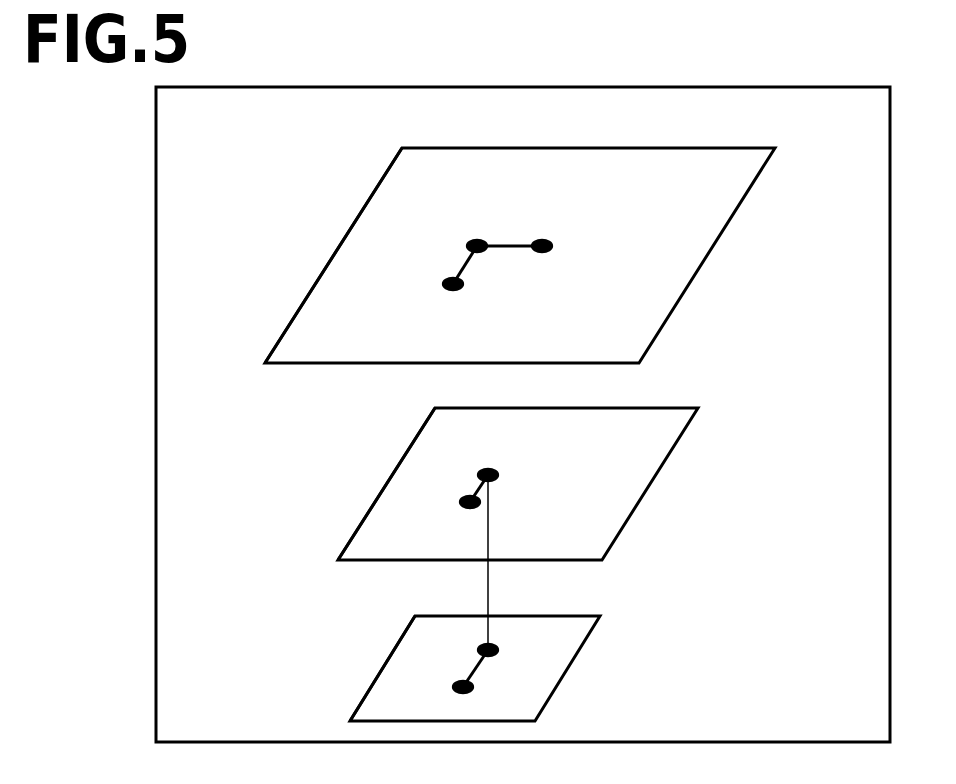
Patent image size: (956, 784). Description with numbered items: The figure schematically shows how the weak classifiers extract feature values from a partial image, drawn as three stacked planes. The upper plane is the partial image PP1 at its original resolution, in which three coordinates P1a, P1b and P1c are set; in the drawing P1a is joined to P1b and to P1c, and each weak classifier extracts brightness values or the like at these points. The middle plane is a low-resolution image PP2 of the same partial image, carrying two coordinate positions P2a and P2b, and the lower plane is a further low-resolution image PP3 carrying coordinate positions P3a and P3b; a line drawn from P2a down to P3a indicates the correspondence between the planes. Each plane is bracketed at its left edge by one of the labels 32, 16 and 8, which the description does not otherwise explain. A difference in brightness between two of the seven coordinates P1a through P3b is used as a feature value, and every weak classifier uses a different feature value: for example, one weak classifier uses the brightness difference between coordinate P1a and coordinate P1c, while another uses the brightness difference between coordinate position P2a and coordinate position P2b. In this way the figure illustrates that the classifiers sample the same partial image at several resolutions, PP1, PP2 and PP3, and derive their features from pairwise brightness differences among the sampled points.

The first wiring layer 32 is at (400, 150).
The second wiring layer 16 is at (433, 410).
The third wiring layer 8 is at (413, 618).
The partial image PP1 is at (673, 163).
The low-resolution image PP2 is at (662, 417).
The low-resolution image PP3 is at (575, 622).
The coordinate P1a is at (478, 244).
The coordinate P1b is at (552, 246).
The coordinate P1c is at (443, 284).
The coordinate position P2a is at (489, 473).
The coordinate position P2b is at (466, 507).
The coordinate position P3a is at (498, 650).
The coordinate position P3b is at (453, 687).